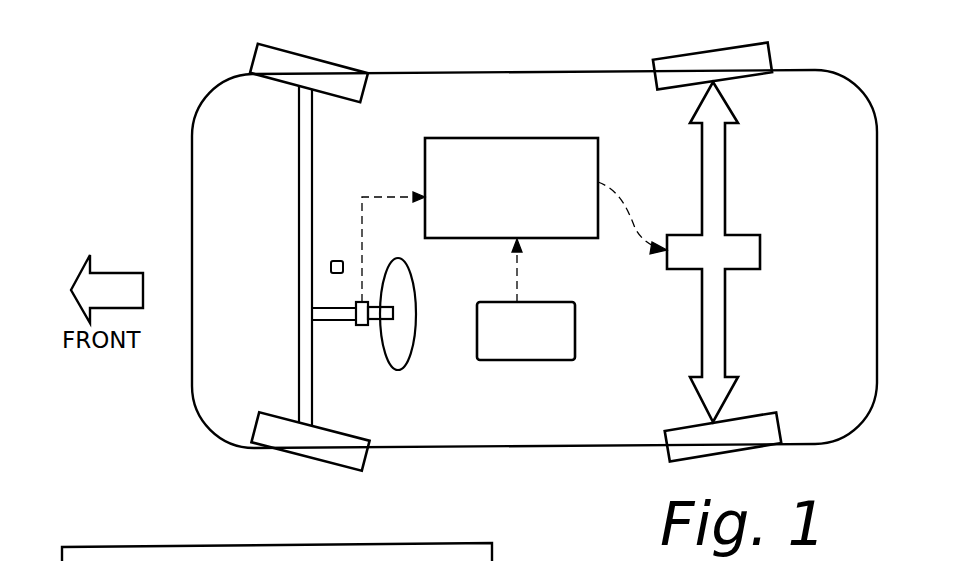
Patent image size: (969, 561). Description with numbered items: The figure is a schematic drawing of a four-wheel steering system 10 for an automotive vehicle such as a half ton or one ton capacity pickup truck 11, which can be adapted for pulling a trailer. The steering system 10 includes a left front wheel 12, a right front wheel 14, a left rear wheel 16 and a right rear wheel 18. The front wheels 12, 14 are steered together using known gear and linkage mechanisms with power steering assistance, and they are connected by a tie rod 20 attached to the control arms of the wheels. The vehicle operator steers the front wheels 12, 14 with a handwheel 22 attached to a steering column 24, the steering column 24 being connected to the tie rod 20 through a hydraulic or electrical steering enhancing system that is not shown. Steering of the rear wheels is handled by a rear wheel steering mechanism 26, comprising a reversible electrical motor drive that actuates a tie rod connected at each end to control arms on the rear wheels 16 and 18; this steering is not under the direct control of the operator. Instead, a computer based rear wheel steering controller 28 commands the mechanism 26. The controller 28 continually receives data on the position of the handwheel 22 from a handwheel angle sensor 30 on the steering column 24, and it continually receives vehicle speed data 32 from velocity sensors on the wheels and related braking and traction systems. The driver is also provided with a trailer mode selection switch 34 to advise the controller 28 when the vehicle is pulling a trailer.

The steering system 10 is at (505, 66).
The pickup truck 11 is at (858, 87).
The left front wheel 12 is at (262, 425).
The right front wheel 14 is at (287, 68).
The left rear wheel 16 is at (763, 422).
The right rear wheel 18 is at (760, 57).
The tie rod 20 is at (312, 148).
The handwheel 22 is at (418, 310).
The steering column 24 is at (340, 320).
The rear wheel steering mechanism 26 is at (747, 247).
The rear wheel steering controller 28 is at (512, 153).
The handwheel angle sensor 30 is at (367, 327).
The vehicle speed data 32 is at (563, 348).
The trailer mode selection switch 34 is at (337, 261).